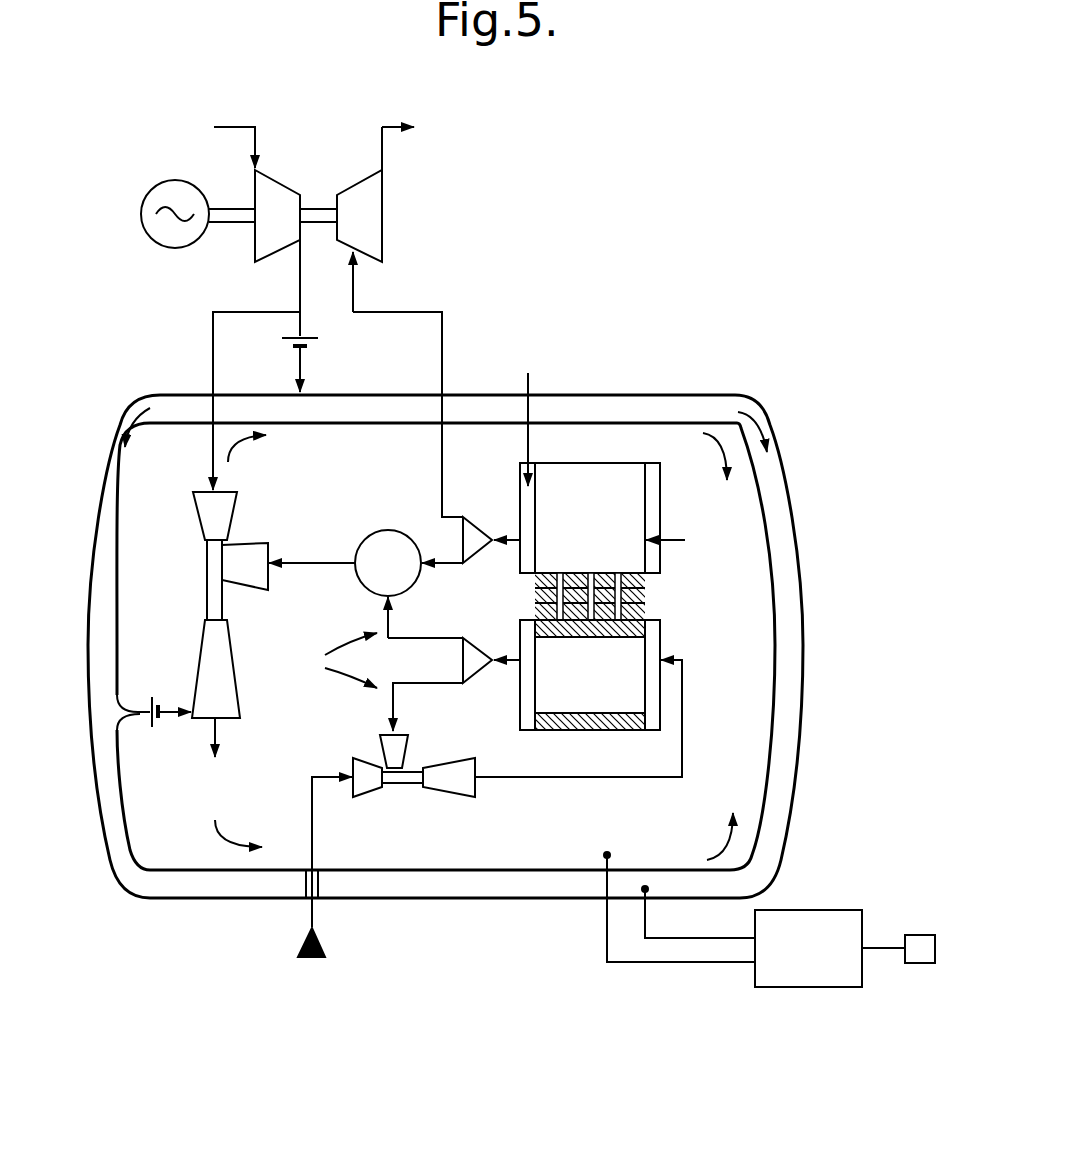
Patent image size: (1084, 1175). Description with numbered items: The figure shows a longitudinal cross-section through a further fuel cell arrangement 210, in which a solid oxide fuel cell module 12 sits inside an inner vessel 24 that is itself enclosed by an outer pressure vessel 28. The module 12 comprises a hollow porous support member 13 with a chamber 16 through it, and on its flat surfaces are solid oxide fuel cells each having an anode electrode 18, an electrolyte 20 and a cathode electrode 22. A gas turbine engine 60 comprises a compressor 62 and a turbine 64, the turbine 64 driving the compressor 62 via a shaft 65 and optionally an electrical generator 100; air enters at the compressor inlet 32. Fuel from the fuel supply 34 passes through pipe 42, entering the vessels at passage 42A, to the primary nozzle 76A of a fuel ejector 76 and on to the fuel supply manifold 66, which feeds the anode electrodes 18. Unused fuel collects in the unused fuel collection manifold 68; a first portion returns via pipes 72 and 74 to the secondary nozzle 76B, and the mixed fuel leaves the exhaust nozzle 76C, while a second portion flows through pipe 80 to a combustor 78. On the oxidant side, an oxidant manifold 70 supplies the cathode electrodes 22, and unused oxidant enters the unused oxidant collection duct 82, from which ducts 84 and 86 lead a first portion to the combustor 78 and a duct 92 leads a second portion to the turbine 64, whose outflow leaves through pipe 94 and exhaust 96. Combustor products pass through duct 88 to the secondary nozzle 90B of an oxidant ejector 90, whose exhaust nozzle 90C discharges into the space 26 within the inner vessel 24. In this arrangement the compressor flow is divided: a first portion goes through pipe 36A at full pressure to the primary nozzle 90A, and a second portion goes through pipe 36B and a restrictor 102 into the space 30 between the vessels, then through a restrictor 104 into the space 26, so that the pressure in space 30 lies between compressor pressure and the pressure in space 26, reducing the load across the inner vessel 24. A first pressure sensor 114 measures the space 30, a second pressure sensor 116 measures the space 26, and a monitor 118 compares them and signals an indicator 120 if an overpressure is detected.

The solid oxide fuel cell module 12 is at (703, 628).
The hollow porous support member 13 is at (592, 732).
The chamber 16 is at (625, 678).
The anode electrode 18 is at (618, 638).
The electrolyte 20 is at (537, 595).
The cathode electrode 22 is at (618, 573).
The inner vessel 24 is at (750, 430).
The space 26 is at (752, 748).
The outer pressure vessel 28 is at (788, 478).
The space 30 is at (790, 678).
The air inlet 32 is at (267, 153).
The fuel supply 34 is at (310, 925).
The pipe 36A is at (213, 340).
The pipe 36B is at (303, 367).
The fuel pipe 42 is at (315, 910).
The fuel passage through wall 42A is at (307, 885).
The gas turbine engine 60 is at (346, 135).
The compressor 62 is at (270, 247).
The turbine 64 is at (384, 212).
The shaft 65 is at (237, 213).
The fuel supply manifold 66 is at (652, 722).
The unused fuel collection manifold 68 is at (527, 713).
The oxidant manifold 70 is at (648, 463).
The pipe 72 is at (492, 665).
The pipe 74 is at (436, 685).
The fuel ejector 76 is at (410, 777).
The primary nozzle 76A is at (370, 782).
The secondary nozzle 76B is at (380, 742).
The exhaust nozzle 76C is at (477, 795).
The combustor 78 is at (380, 535).
The pipe 80 is at (398, 637).
The unused oxidant collection duct 82 is at (530, 418).
The duct 84 is at (513, 537).
The duct 86 is at (450, 556).
The duct 88 is at (323, 568).
The oxidant ejector 90 is at (214, 557).
The primary nozzle 90A is at (198, 520).
The secondary nozzle 90B is at (238, 572).
The exhaust nozzle 90C is at (220, 688).
The duct 92 is at (442, 312).
The pipe 94 is at (384, 148).
The exhaust 96 is at (416, 122).
The electrical generator 100 is at (146, 231).
The restrictor 102 is at (320, 340).
The restrictor 104 is at (160, 727).
The first pressure sensor 114 is at (645, 889).
The second pressure sensor 116 is at (607, 855).
The monitor 118 is at (813, 920).
The indicator 120 is at (920, 940).
The fuel cell arrangement 210 is at (718, 257).